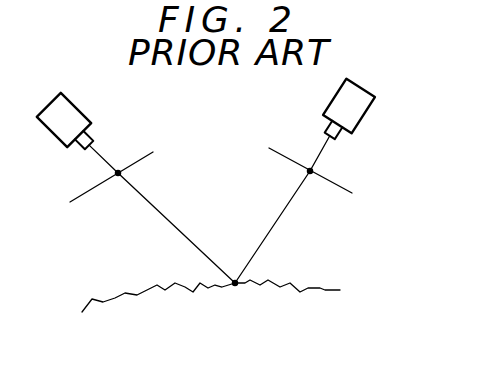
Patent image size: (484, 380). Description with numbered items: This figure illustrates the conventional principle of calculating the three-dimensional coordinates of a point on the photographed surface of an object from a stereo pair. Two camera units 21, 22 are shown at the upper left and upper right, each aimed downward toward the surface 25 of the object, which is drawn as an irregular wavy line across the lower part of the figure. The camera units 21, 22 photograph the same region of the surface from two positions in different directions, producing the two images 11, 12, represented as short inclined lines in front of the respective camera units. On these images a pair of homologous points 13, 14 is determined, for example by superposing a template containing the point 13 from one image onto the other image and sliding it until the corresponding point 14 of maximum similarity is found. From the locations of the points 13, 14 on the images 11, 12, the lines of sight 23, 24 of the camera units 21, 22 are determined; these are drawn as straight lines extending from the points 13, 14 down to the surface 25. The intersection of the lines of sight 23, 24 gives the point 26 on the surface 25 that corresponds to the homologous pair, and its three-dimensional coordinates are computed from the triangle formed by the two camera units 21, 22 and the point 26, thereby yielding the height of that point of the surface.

The image 11 is at (77, 202).
The image 12 is at (344, 187).
The homologous point 13 is at (117, 176).
The homologous point 14 is at (310, 174).
The camera unit 21 is at (73, 103).
The camera unit 22 is at (363, 89).
The line of sight 23 is at (172, 220).
The line of sight 24 is at (256, 254).
The surface of the object 25 is at (331, 290).
The point 26 is at (236, 284).